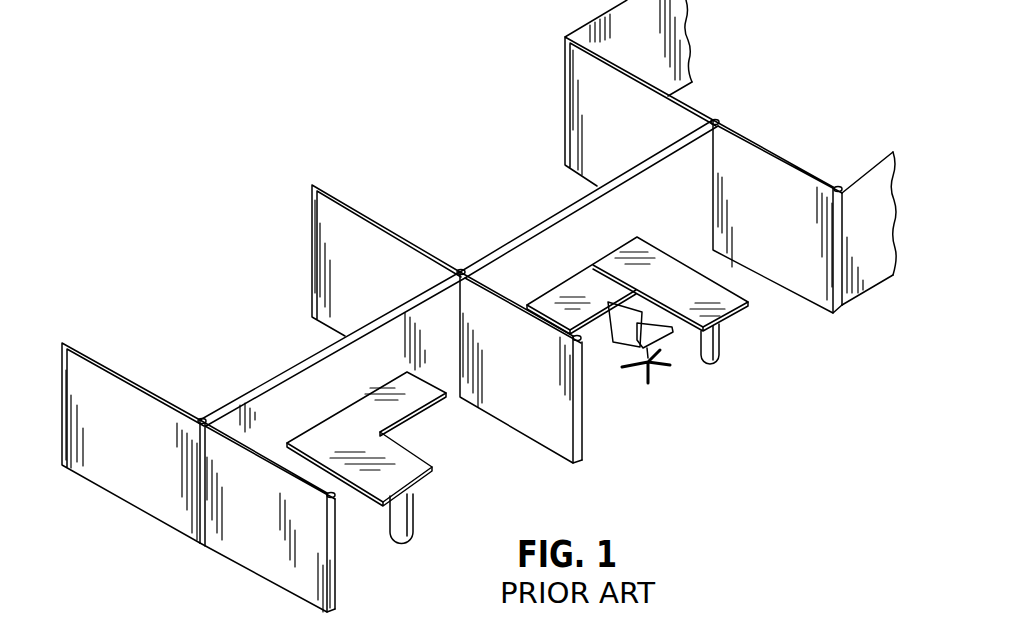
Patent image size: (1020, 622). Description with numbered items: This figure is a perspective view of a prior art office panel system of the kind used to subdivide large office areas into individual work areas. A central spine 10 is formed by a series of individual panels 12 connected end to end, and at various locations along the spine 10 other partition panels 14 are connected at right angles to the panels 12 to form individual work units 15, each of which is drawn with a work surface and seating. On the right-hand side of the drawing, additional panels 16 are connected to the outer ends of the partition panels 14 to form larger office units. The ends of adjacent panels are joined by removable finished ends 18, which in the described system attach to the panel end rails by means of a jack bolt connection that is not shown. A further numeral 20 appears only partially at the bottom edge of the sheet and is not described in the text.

The central spine 10 is at (486, 241).
The individual panels 12 is at (550, 212).
The partition panels 14 is at (362, 212).
The individual work units 15 is at (486, 485).
The additional panels 16 is at (877, 270).
The removable finished ends 18 is at (200, 545).
The reference numeral (partially shown) 20 is at (710, 617).